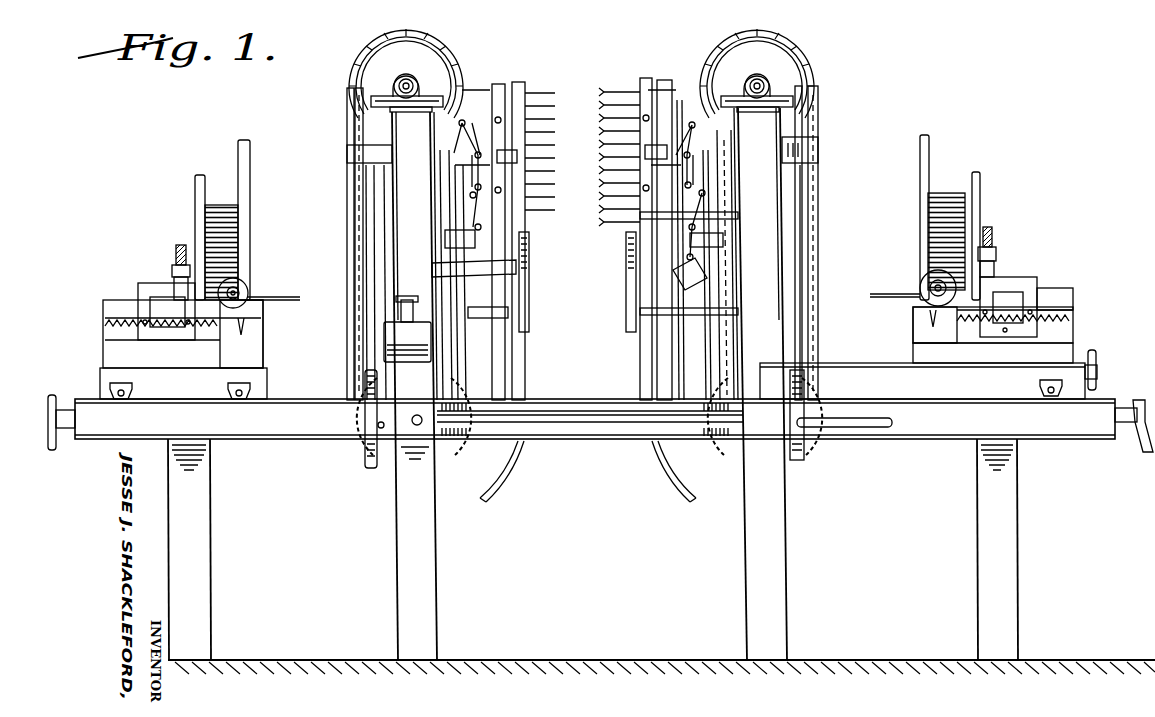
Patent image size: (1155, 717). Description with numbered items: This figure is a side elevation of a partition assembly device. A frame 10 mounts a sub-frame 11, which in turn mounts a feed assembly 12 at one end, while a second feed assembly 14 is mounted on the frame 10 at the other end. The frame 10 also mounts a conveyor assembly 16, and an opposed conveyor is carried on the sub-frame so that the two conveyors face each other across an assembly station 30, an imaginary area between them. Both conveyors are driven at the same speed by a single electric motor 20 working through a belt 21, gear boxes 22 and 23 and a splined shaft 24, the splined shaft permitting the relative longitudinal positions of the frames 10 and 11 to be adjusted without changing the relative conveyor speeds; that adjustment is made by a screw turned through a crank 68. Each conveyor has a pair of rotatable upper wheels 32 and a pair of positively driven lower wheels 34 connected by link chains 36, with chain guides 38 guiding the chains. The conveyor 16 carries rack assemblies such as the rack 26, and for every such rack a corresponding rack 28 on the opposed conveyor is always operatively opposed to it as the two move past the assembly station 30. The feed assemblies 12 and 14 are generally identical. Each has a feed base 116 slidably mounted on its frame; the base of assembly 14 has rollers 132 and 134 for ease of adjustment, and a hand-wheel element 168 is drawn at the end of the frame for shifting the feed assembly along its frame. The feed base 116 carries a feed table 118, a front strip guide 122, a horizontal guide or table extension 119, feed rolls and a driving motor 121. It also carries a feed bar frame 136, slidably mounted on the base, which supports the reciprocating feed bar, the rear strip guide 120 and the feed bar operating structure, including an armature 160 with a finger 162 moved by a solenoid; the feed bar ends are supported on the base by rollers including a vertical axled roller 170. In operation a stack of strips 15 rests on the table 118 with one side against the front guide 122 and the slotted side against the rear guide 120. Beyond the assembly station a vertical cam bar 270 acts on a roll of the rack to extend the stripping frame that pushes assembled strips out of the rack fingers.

The frame 10 is at (427, 228).
The sub-frame 11 is at (769, 203).
The feed assembly 12 is at (1008, 271).
The feed assembly 14 is at (160, 262).
The strips 15 is at (230, 242).
The conveyor assembly 16 is at (392, 22).
The electric motor 20 is at (407, 329).
The belt 21 is at (376, 428).
The gear box 22 is at (414, 432).
The gear box 23 is at (715, 450).
The splined shaft 24 is at (578, 412).
The rack assembly 26 is at (656, 74).
The rack assembly 28 is at (532, 80).
The assembly station 30 is at (572, 175).
The upper wheels 32 is at (422, 62).
The lower wheels 34 is at (376, 468).
The link chains 36 is at (377, 42).
The chain guides 38 is at (347, 220).
The crank 68 is at (1135, 450).
The feed base 116 is at (100, 376).
The feed table 118 is at (103, 300).
The horizontal guide or table extension 119 is at (290, 302).
The rear strip guide 120 is at (195, 190).
The driving motor 121 is at (245, 290).
The front strip guide 122 is at (250, 192).
The roller 132 is at (121, 399).
The roller 134 is at (242, 399).
The feed bar frame 136 is at (138, 292).
The armature 160 is at (188, 332).
The finger 162 is at (165, 337).
The handwheel 168 is at (60, 455).
The vertical axled roller 170 is at (529, 239).
The vertical cam bar 270 is at (512, 470).